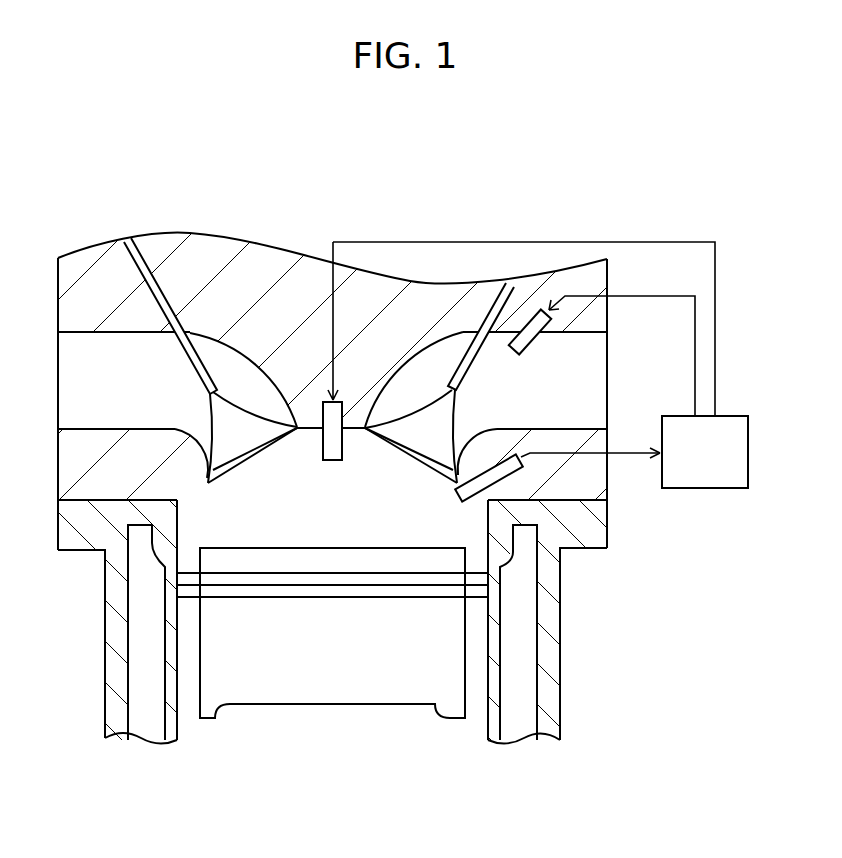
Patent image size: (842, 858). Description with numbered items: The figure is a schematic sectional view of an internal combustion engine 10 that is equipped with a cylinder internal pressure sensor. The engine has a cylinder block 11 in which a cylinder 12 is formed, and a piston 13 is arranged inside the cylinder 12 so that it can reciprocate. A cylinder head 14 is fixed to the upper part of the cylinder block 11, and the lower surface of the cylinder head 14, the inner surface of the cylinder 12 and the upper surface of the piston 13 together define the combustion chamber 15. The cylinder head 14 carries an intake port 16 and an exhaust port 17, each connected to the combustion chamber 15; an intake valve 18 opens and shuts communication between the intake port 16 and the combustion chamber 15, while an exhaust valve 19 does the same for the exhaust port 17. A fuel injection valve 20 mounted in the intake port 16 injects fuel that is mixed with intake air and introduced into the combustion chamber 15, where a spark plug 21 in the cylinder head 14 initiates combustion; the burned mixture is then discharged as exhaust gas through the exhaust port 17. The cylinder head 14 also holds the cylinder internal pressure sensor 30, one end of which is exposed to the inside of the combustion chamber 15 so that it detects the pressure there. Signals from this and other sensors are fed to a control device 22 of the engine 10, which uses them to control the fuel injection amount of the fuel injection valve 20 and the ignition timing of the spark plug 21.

The internal combustion engine 10 is at (624, 180).
The cylinder block 11 is at (557, 652).
The cylinder 12 is at (487, 722).
The piston 13 is at (333, 693).
The cylinder head 14 is at (595, 482).
The combustion chamber 15 is at (317, 517).
The intake port 16 is at (588, 334).
The exhaust port 17 is at (80, 334).
The intake valve 18 is at (438, 413).
The exhaust valve 19 is at (215, 402).
The fuel injection valve 20 is at (530, 352).
The spark plug 21 is at (343, 452).
The control device 22 is at (698, 490).
The cylinder internal pressure sensor 30 is at (463, 502).